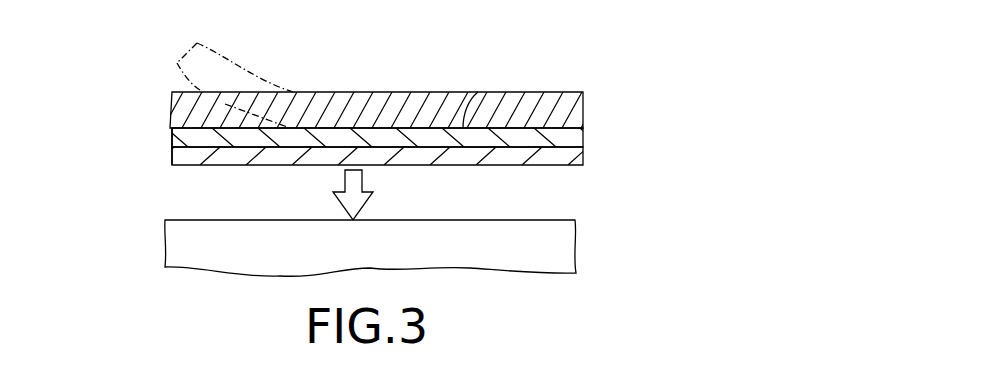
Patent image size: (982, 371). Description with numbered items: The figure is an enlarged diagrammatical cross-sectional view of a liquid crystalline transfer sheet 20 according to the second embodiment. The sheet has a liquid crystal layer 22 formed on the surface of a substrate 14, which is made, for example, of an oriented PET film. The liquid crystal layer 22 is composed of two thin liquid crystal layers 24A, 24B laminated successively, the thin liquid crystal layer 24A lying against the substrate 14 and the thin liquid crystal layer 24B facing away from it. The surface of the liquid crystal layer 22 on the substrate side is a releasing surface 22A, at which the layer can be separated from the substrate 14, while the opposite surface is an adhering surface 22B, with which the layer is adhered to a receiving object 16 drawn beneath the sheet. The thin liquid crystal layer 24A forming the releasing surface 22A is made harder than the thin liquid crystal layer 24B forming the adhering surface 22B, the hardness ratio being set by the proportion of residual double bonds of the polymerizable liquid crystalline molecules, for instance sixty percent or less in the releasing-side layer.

The liquid crystalline transfer sheet 20 is at (158, 77).
The substrate 14 is at (562, 107).
The liquid crystal layer 22 is at (684, 118).
The releasing surface 22A is at (478, 92).
The adhering surface 22B is at (200, 166).
The thin liquid crystal layer 24A is at (563, 138).
The thin liquid crystal layer 24B is at (567, 158).
The receiving object 16 is at (563, 243).